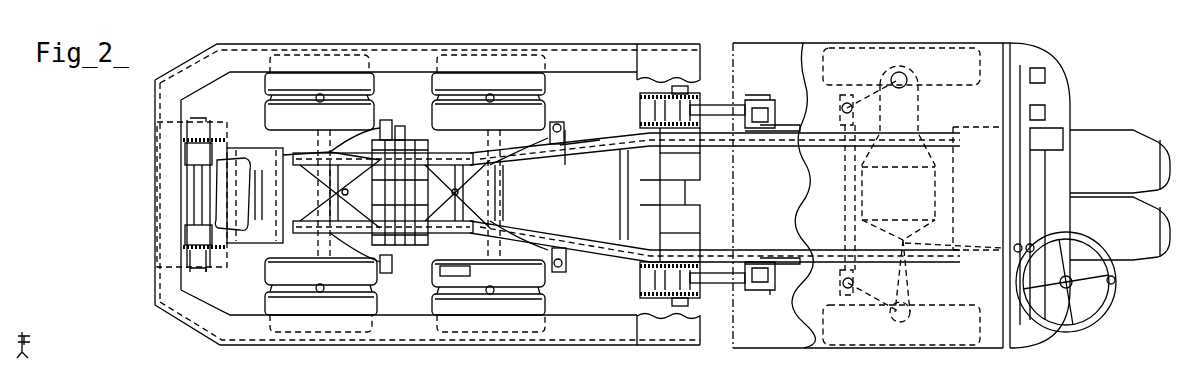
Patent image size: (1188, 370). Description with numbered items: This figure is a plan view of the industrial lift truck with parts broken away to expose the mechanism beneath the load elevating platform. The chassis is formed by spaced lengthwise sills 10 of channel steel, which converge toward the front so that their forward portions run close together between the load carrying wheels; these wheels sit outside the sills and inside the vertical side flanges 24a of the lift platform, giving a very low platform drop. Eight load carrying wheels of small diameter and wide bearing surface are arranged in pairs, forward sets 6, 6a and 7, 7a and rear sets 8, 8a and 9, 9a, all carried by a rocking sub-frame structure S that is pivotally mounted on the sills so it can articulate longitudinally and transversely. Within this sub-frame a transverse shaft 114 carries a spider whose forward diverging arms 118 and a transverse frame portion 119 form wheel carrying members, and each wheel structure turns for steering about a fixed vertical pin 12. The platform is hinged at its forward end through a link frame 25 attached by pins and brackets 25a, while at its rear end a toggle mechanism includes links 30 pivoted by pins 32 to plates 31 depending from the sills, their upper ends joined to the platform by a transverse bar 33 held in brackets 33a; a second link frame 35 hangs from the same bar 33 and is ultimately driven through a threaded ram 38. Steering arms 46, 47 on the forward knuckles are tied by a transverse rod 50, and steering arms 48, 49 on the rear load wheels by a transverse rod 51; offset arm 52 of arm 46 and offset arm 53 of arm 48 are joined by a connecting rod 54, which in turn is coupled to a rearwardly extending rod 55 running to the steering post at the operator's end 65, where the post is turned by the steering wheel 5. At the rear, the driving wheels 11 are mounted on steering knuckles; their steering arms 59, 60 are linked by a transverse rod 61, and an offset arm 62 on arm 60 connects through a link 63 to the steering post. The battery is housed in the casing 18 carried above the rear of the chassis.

The steering wheel 5 is at (1092, 318).
The forward load carrying wheel 6 is at (265, 84).
The forward load carrying wheel 6a is at (265, 110).
The forward load carrying wheel 7 is at (268, 305).
The forward load carrying wheel 7a is at (268, 270).
The rear load carrying wheel 8 is at (538, 84).
The rear load carrying wheel 8a is at (536, 113).
The rear load carrying wheel 9 is at (538, 305).
The rear load carrying wheel 9a is at (538, 278).
The chassis sills 10 is at (603, 148).
The driving wheels 11 is at (943, 58).
The pin 12 is at (407, 193).
The battery housing 18 is at (808, 338).
The vertical side flanges 24a is at (222, 333).
The link frame 25 is at (242, 225).
The pins and brackets 25a is at (205, 262).
The links 30 is at (714, 106).
The plates 31 is at (770, 291).
The pivot pins 32 is at (760, 96).
The transverse bar 33 is at (680, 88).
The brackets 33a is at (640, 100).
The second link frame 35 is at (695, 166).
The threaded rod or ram 38 is at (700, 186).
The steering arm 46 is at (372, 127).
The steering arm 47 is at (392, 262).
The steering arm 48 is at (502, 167).
The steering arm 49 is at (504, 230).
The transverse rod 50 is at (400, 140).
The transverse rod 51 is at (567, 158).
The offset arm portion 52 is at (290, 150).
The offset arm 53 is at (414, 192).
The connecting rod 54 is at (391, 193).
The rearwardly extending rod 55 is at (622, 242).
The steering arm 59 is at (867, 92).
The steering arm 60 is at (868, 300).
The transverse rod or link 61 is at (845, 210).
The offset arm 62 is at (912, 295).
The link 63 is at (970, 244).
The operator's end 65 is at (1103, 135).
The transverse shaft 114 is at (453, 273).
The forward diverging arms 118 is at (280, 190).
The transverse frame portion 119 is at (505, 196).
The sub-frame structure S is at (494, 141).